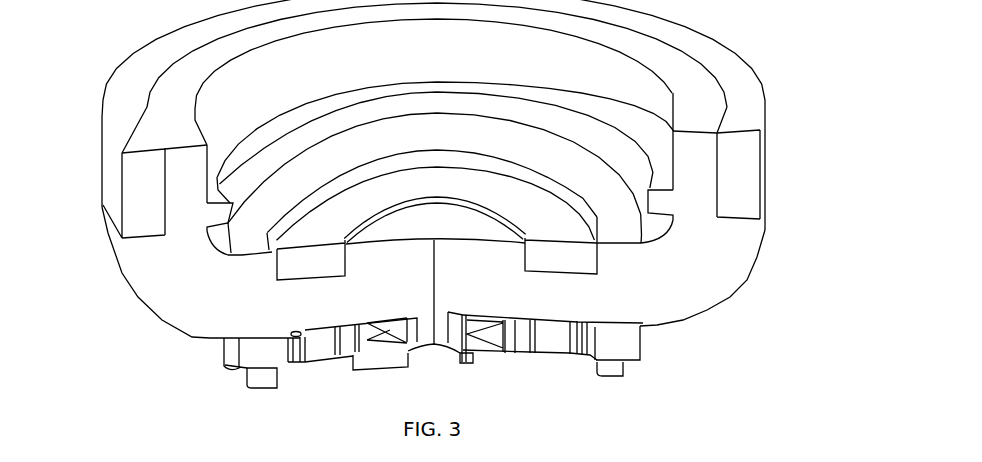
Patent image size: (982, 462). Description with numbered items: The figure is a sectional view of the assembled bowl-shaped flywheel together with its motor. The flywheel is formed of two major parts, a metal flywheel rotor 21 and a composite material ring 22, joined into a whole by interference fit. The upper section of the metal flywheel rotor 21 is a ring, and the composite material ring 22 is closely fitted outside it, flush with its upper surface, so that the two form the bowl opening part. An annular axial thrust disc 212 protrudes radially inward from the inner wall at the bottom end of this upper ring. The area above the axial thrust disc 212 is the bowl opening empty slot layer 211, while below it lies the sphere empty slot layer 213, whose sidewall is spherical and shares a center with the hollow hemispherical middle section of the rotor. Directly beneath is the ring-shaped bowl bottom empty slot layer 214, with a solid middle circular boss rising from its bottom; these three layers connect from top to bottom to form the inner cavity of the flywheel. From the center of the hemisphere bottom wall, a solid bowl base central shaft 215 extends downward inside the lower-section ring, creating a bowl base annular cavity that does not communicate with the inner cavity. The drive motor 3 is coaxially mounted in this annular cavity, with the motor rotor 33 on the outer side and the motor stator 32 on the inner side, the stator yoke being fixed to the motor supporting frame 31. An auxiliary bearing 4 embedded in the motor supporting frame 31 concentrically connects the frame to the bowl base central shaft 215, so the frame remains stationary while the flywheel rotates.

The metal flywheel rotor 21 is at (195, 270).
The composite material ring 22 is at (148, 182).
The bowl opening empty slot layer 211 is at (640, 108).
The axial thrust disc 212 is at (660, 202).
The sphere empty slot layer 213 is at (652, 228).
The bowl bottom empty slot layer 214 is at (565, 255).
The bowl base central shaft 215 is at (440, 334).
The drive motor 3 is at (315, 337).
The auxiliary bearing 4 is at (410, 340).
The motor supporting frame 31 is at (469, 358).
The motor stator 32 is at (522, 332).
The motor rotor 33 is at (590, 347).